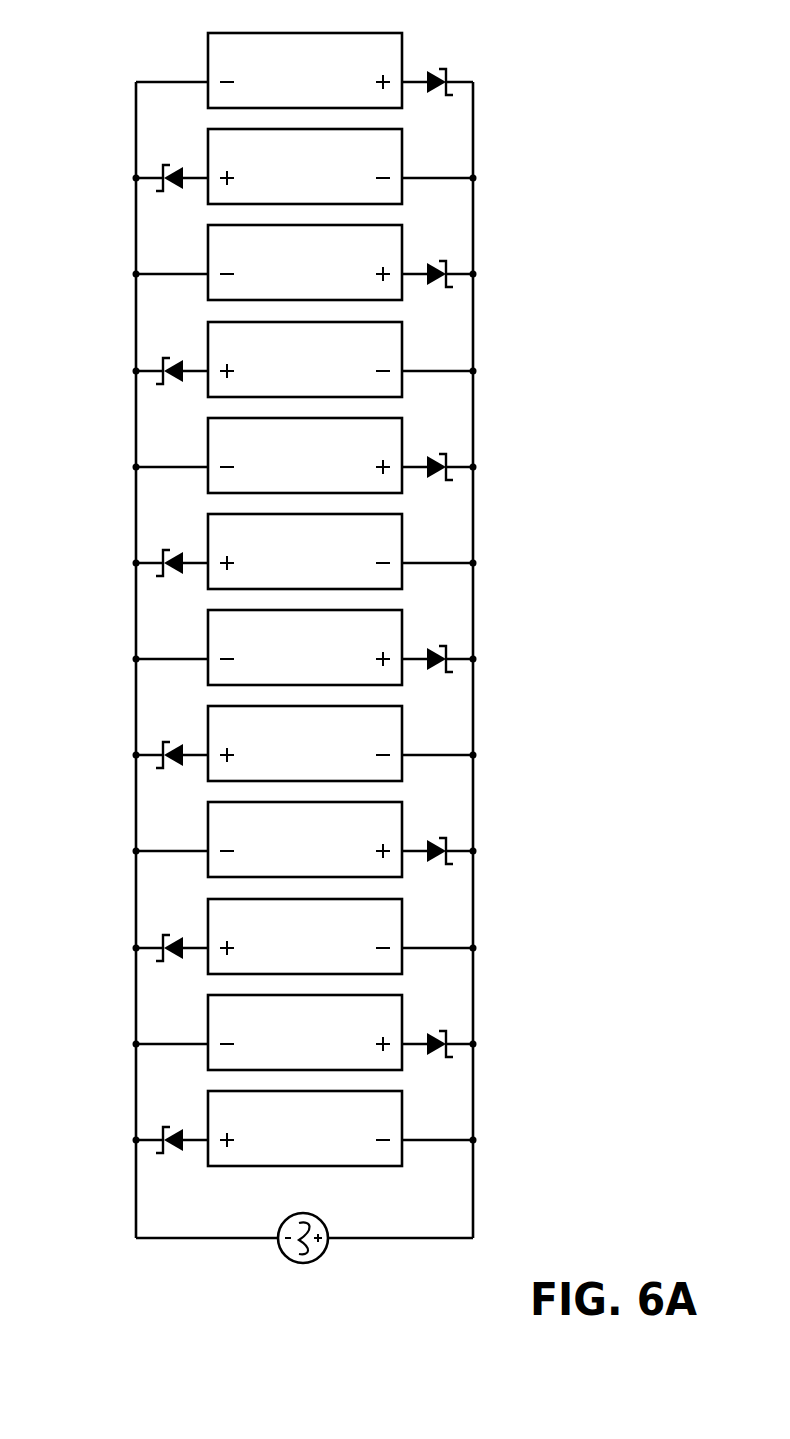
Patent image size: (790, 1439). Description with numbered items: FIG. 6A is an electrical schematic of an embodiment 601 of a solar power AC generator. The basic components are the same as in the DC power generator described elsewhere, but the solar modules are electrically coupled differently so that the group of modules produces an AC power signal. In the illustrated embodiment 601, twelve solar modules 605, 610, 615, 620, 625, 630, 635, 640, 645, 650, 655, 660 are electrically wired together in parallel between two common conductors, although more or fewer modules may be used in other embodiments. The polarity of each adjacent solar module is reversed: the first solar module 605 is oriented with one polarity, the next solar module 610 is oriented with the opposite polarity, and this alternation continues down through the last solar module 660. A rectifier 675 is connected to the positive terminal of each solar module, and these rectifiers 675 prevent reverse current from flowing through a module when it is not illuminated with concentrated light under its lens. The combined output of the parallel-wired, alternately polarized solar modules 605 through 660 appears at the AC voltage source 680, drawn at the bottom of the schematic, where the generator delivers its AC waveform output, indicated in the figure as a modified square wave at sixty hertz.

The embodiment 601 is at (325, 24).
The solar module 605 is at (323, 81).
The solar module 610 is at (323, 177).
The solar module 615 is at (323, 273).
The solar module 620 is at (323, 370).
The solar module 625 is at (323, 466).
The solar module 630 is at (323, 562).
The solar module 635 is at (323, 658).
The solar module 640 is at (323, 754).
The solar module 645 is at (323, 850).
The solar module 650 is at (323, 947).
The solar module 655 is at (323, 1043).
The solar module 660 is at (323, 1139).
The rectifier 675 is at (447, 68).
The AC voltage source 680 is at (316, 1360).